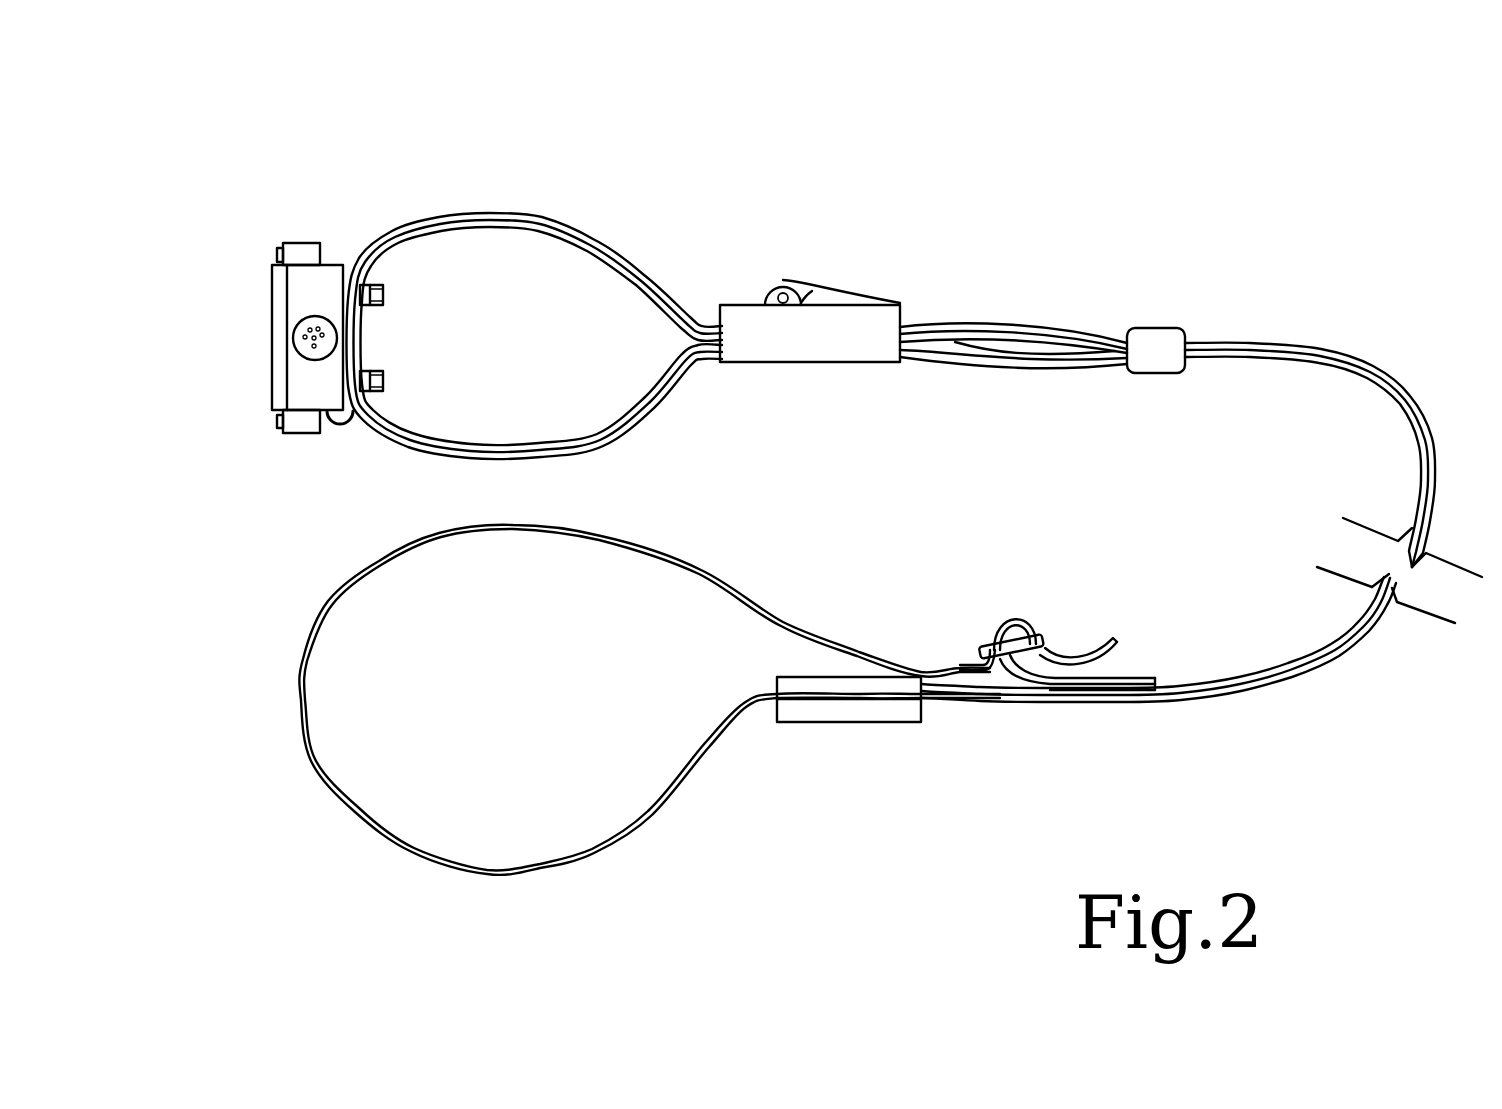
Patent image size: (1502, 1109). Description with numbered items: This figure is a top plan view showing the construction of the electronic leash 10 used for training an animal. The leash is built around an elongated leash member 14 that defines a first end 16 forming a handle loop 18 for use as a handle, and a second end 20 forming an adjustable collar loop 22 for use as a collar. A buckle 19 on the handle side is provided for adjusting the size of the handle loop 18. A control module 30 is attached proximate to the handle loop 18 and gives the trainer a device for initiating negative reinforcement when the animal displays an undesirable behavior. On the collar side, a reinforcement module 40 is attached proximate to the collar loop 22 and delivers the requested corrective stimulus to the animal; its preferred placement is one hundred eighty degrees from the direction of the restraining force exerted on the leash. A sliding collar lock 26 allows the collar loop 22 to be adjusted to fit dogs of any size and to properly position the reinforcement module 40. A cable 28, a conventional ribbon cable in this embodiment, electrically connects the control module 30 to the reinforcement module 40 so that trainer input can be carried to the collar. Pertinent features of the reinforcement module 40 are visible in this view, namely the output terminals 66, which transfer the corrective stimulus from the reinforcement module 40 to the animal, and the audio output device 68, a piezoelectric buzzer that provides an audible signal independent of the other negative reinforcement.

The electronic leash 10 is at (1032, 266).
The elongated leash member 14 is at (1382, 366).
The first end 16 is at (298, 706).
The handle loop 18 is at (487, 537).
The buckle 19 is at (1030, 645).
The second end 20 is at (699, 320).
The adjustable collar loop 22 is at (472, 228).
The sliding collar lock 26 is at (823, 325).
The cable 28 is at (1314, 670).
The control module 30 is at (845, 705).
The reinforcement module 40 is at (257, 286).
The output terminals 66 is at (385, 295).
The audio output device 68 is at (293, 348).